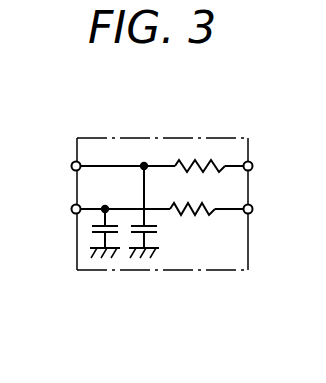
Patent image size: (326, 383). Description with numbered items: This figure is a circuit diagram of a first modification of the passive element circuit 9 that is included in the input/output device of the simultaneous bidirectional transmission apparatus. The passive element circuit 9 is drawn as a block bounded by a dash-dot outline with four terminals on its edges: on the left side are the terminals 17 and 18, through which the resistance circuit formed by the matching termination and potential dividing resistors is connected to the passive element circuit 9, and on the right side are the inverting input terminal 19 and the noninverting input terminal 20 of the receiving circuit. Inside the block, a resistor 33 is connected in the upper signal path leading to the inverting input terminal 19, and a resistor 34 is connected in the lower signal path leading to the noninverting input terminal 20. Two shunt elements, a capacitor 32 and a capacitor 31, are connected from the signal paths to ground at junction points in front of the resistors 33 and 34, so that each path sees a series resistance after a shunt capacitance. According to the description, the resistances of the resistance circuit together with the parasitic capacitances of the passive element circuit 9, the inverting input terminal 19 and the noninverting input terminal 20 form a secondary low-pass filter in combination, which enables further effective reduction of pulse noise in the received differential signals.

The passive element circuit 9 is at (147, 271).
The terminal 17 is at (72, 162).
The terminal 18 is at (72, 212).
The inverting input terminal 19 is at (254, 167).
The noninverting input terminal 20 is at (253, 212).
The capacitor 31 is at (160, 232).
The capacitor 32 is at (90, 232).
The resistor 33 is at (200, 161).
The resistor 34 is at (205, 214).